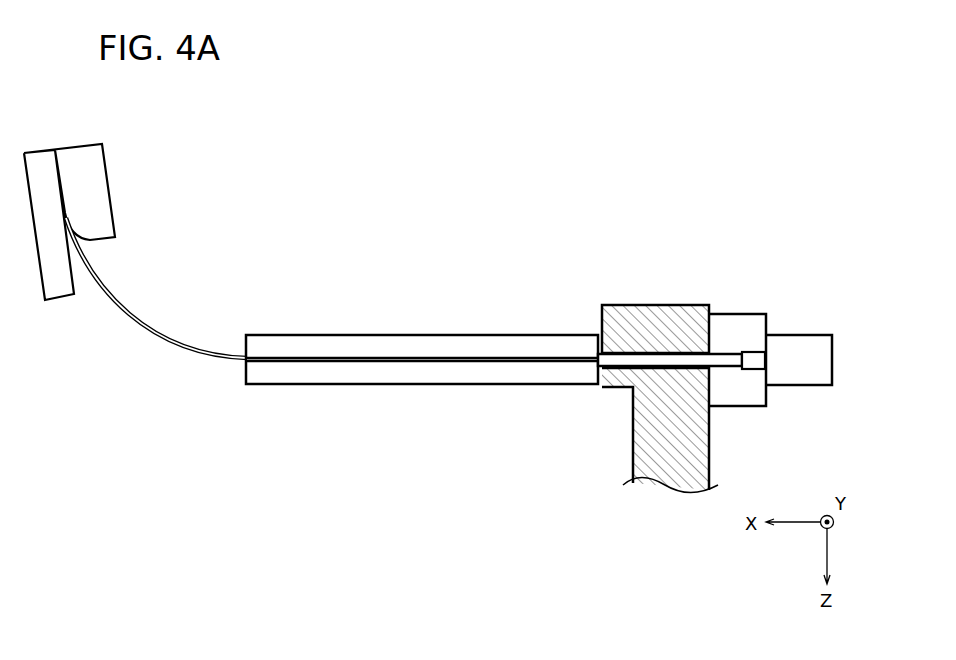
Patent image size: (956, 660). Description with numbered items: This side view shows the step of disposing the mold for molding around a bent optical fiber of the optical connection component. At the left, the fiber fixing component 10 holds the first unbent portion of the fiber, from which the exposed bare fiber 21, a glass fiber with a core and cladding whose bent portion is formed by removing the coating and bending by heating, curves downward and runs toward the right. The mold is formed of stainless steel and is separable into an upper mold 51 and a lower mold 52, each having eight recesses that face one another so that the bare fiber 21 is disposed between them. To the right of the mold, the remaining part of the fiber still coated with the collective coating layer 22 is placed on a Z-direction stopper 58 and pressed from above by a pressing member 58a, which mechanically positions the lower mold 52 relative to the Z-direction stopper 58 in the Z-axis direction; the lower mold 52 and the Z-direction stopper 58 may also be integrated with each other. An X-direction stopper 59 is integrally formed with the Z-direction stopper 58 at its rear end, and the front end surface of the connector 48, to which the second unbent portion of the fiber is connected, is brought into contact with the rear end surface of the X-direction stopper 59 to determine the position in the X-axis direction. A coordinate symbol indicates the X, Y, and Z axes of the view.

The fiber fixing component 10 is at (117, 175).
The bare fiber 21 is at (130, 322).
The collective coating layer 22 is at (623, 355).
The connector 48 is at (801, 342).
The upper mold 51 is at (298, 340).
The lower mold 52 is at (298, 378).
The Z-direction stopper 58 is at (651, 427).
The pressing member 58a is at (662, 312).
The X-direction stopper 59 is at (733, 320).